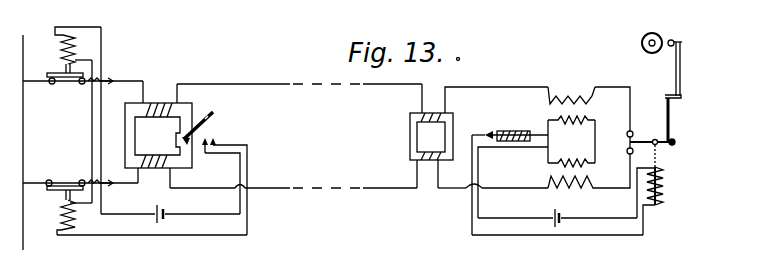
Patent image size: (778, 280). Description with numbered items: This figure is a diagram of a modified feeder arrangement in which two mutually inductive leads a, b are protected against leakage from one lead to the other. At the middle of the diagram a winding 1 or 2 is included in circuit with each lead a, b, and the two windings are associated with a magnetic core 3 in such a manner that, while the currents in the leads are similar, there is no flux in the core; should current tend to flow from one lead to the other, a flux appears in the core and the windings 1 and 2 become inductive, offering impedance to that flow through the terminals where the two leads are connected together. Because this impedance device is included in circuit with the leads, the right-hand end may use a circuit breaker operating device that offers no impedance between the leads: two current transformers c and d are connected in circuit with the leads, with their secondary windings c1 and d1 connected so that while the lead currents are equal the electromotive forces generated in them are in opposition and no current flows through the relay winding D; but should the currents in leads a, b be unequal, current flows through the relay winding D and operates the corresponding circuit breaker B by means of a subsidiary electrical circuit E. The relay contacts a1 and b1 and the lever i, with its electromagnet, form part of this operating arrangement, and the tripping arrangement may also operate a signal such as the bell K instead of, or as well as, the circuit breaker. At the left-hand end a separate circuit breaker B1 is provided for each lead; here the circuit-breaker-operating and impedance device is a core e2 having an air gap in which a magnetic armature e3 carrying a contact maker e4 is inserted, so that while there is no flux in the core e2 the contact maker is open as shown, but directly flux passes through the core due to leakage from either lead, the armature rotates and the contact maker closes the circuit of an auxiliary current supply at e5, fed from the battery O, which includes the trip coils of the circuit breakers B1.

The circuit breaker B1 is at (79, 131).
The core e2 is at (126, 130).
The magnetic armature e3 is at (157, 135).
The contact maker e4 is at (213, 112).
The contacts of auxiliary current supply circuit e5 is at (214, 134).
The lead a is at (271, 82).
The lead b is at (271, 186).
The battery O is at (170, 220).
The subsidiary electrical circuit E is at (350, 223).
The winding 1 is at (442, 116).
The winding 2 is at (425, 149).
The magnetic core 3 is at (409, 136).
The current transformer c is at (589, 104).
The secondary winding c1 is at (571, 139).
The secondary winding d1 is at (571, 154).
The current transformer d is at (589, 181).
The relay winding D is at (510, 175).
The contact a1 is at (628, 132).
The contact b1 is at (628, 154).
The lever i is at (655, 139).
The bell K is at (662, 75).
The circuit breaker B is at (660, 190).